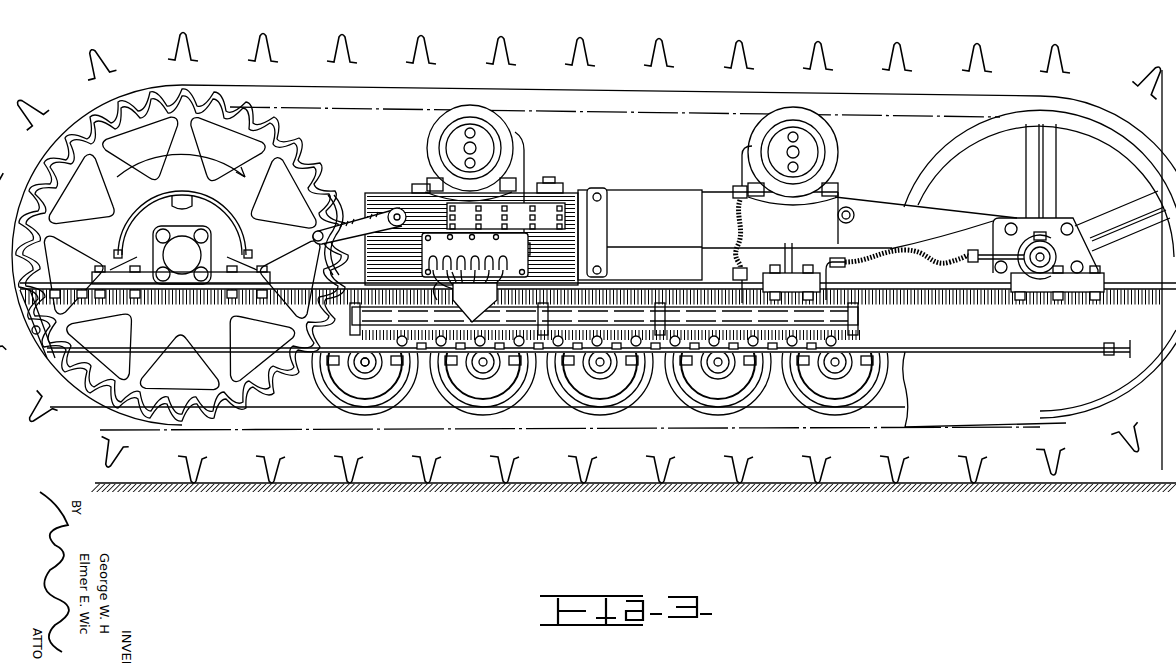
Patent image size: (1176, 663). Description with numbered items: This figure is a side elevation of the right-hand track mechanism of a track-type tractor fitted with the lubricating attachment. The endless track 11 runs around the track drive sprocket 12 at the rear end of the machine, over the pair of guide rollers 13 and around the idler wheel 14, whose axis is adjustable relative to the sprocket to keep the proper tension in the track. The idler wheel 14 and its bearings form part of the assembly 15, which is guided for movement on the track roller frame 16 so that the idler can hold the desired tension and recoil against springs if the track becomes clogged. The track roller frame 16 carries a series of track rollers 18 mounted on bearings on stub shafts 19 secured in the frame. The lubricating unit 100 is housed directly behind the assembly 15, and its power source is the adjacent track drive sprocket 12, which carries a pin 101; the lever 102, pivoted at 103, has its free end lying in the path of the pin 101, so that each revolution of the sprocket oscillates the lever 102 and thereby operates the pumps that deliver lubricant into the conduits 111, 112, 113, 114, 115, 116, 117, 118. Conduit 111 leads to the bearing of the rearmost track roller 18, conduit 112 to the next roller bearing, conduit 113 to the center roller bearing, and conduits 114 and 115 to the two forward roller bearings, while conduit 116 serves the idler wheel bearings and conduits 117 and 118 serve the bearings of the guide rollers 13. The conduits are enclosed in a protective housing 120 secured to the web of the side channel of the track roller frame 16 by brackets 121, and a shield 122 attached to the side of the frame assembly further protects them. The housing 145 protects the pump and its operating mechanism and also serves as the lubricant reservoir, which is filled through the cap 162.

The endless track 11 is at (978, 479).
The track drive sprocket 12 is at (260, 134).
The guide rollers 13 is at (508, 142).
The idler wheel 14 is at (940, 163).
The idler wheel assembly 15 is at (860, 206).
The track roller frame 16 is at (1012, 338).
The track rollers 18 is at (387, 402).
The stub shafts 19 is at (366, 365).
The lubricating unit 100 is at (628, 176).
The pin 101 is at (316, 232).
The lever 102 is at (330, 258).
The lever pivot 103 is at (397, 208).
The conduit 111 is at (427, 270).
The conduit 112 is at (437, 290).
The conduit 113 is at (458, 275).
The conduit 114 is at (452, 252).
The conduit 115 is at (478, 253).
The conduit 116 is at (488, 262).
The conduit 117 is at (490, 300).
The conduit 118 is at (530, 263).
The protective housing 120 is at (625, 307).
The brackets 121 is at (348, 317).
The shield 122 is at (1072, 400).
The housing 145 is at (531, 190).
The cap 162 is at (540, 190).